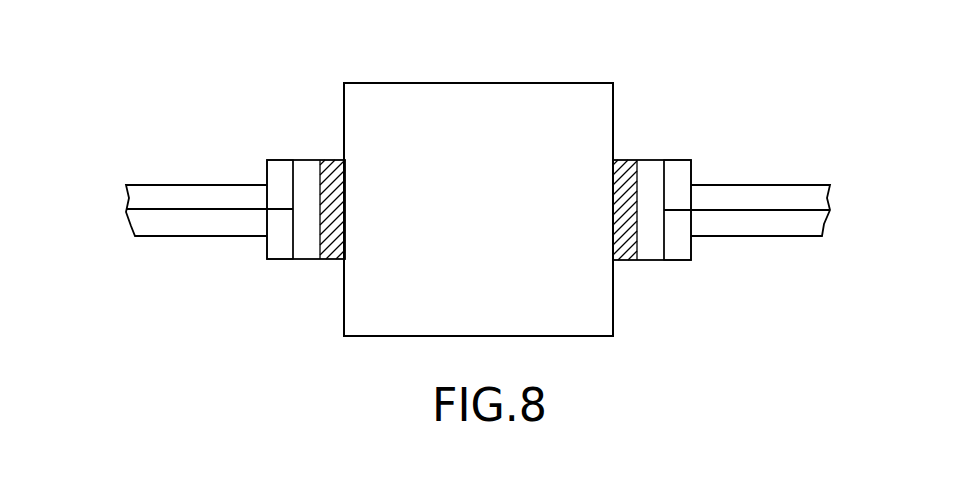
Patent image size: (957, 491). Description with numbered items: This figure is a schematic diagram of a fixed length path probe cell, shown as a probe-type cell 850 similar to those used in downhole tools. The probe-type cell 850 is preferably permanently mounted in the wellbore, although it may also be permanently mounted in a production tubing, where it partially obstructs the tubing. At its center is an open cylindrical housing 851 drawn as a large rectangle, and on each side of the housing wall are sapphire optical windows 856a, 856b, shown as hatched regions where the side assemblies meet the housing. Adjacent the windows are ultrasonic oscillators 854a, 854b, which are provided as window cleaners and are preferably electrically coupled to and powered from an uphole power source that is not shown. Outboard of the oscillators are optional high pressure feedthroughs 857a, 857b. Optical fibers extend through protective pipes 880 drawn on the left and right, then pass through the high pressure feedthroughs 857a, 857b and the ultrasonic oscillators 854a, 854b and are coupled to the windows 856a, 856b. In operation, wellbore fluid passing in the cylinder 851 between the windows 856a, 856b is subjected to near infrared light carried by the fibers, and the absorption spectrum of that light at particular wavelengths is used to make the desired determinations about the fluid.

The probe-type cell 850 is at (735, 63).
The open cylindrical housing 851 is at (591, 311).
The ultrasonic oscillator 854a is at (694, 207).
The ultrasonic oscillator 854b is at (260, 213).
The sapphire optical window 856a is at (623, 250).
The sapphire optical window 856b is at (332, 168).
The high pressure feedthrough 857a is at (678, 172).
The high pressure feedthrough 857b is at (280, 178).
The protective pipe 880 is at (178, 234).